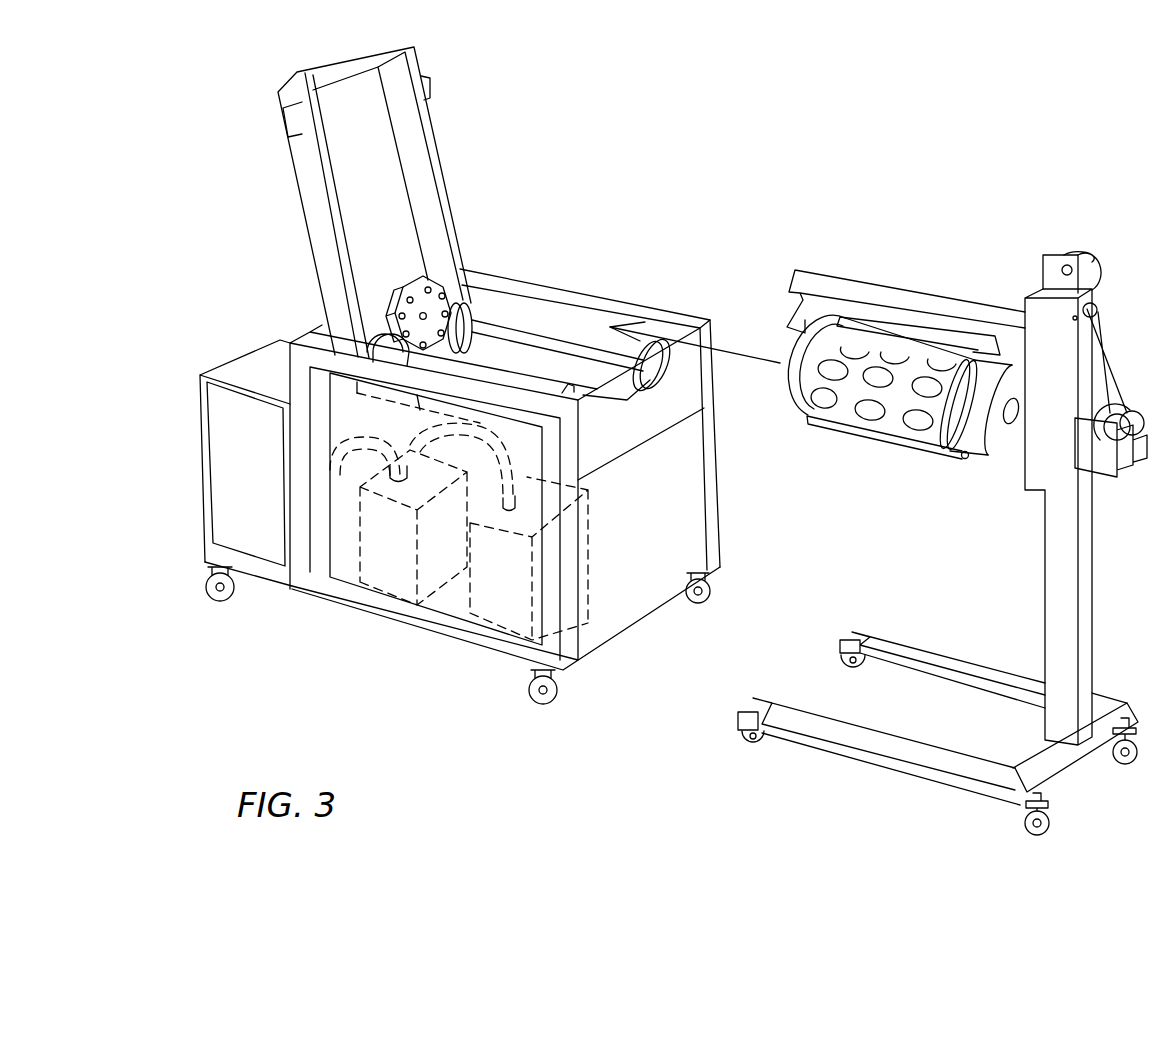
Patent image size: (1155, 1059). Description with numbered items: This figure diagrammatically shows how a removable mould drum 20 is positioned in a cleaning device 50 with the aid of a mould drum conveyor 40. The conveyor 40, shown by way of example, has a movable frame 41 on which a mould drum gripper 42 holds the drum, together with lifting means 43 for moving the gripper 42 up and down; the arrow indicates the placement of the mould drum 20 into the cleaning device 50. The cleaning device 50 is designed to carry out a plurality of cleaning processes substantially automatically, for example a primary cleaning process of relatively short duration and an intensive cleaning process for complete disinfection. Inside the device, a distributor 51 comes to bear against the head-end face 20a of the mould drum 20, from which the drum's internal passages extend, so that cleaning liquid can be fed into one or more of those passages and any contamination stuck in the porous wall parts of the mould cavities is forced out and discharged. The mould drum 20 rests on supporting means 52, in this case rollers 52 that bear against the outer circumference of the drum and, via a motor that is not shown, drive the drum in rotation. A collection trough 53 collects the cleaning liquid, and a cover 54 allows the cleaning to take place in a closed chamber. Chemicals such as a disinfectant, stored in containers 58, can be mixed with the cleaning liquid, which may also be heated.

The mould drum 20 is at (852, 395).
The head end of the mould drum 20a is at (772, 397).
The mould drum conveyor 40 is at (953, 567).
The movable frame 41 is at (1050, 610).
The mould drum gripper 42 is at (915, 457).
The lifting means 43 is at (1115, 320).
The cleaning device 50 is at (318, 647).
The distributor 51 is at (444, 290).
The supporting means (rollers) 52 is at (380, 365).
The collection trough 53 is at (608, 436).
The cover 54 is at (422, 192).
The containers 58 is at (505, 605).